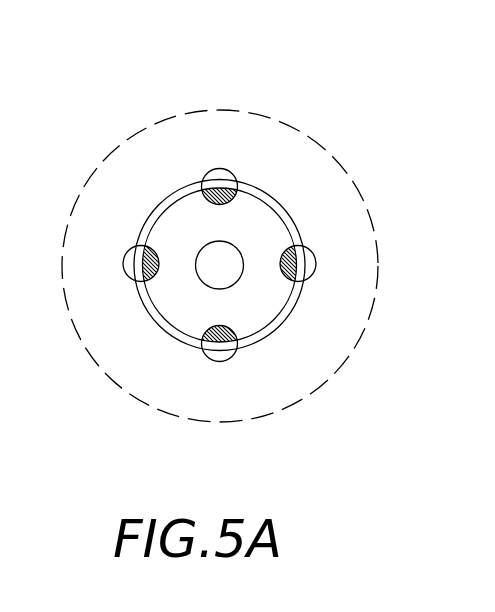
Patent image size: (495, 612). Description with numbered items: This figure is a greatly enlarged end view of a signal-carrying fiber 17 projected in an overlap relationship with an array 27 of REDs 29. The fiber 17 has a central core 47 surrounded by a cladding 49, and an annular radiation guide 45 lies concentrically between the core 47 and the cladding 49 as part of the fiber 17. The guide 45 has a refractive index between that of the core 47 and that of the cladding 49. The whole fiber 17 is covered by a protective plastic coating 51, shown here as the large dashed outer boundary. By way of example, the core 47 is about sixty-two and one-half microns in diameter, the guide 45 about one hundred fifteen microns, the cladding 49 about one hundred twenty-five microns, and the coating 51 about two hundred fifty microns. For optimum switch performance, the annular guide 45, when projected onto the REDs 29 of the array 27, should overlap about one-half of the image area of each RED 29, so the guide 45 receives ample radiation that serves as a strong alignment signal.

The signal-carrying fiber 17 is at (388, 221).
The array of REDs 27 is at (170, 386).
The REDs 29 is at (222, 180).
The radiation guide 45 is at (272, 227).
The core 47 is at (227, 252).
The cladding 49 is at (282, 320).
The protective plastic coating 51 is at (208, 407).